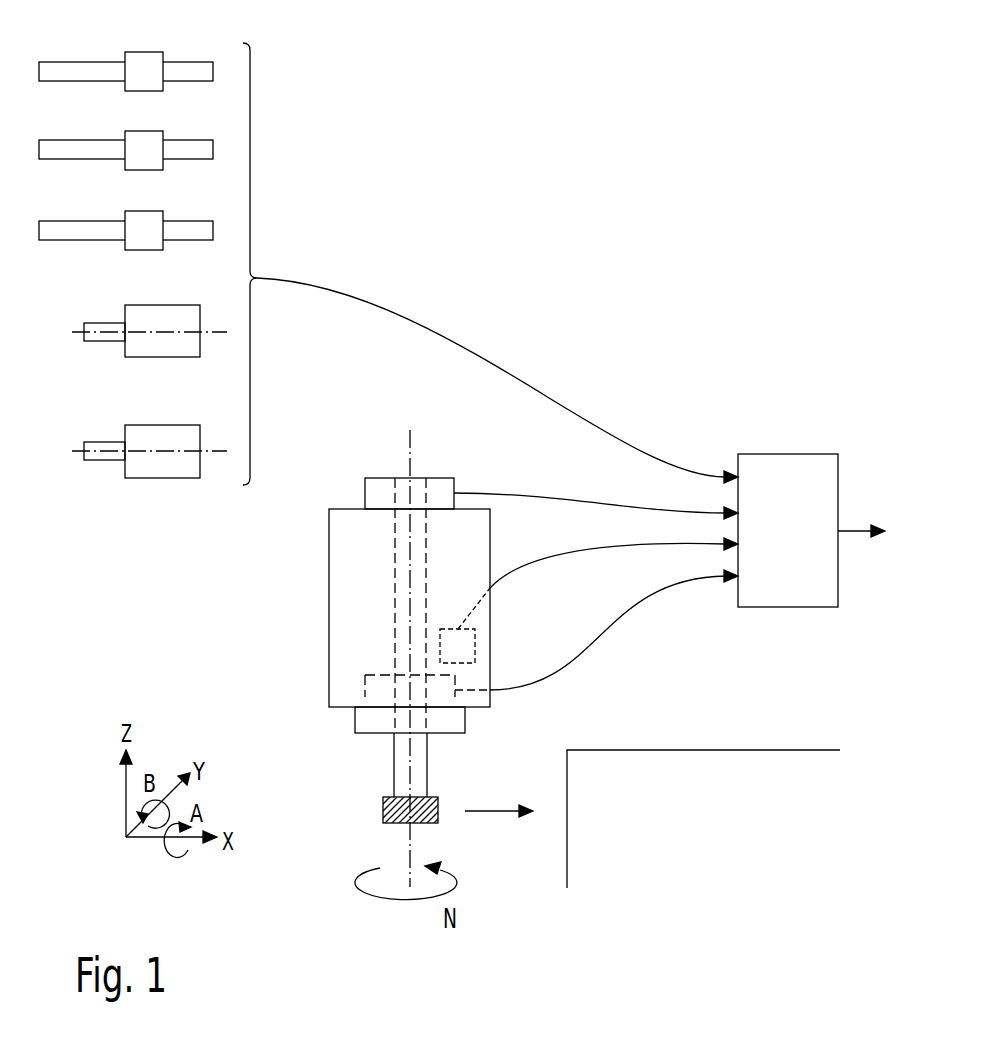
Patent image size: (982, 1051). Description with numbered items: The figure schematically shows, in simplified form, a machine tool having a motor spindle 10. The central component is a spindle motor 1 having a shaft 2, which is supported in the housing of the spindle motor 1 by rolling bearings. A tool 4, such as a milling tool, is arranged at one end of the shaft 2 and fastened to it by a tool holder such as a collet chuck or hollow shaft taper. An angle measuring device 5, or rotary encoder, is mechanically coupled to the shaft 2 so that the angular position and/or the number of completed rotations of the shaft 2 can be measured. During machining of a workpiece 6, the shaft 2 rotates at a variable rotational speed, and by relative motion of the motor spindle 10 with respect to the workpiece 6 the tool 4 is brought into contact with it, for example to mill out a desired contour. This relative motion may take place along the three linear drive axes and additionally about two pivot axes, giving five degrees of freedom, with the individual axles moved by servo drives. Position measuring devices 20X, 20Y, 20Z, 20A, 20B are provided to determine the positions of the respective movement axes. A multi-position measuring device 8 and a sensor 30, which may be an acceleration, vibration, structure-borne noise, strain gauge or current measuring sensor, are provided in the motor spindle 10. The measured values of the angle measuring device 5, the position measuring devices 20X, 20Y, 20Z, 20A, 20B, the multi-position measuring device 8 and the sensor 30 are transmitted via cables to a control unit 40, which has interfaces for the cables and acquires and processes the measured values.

The spindle motor 1 is at (329, 622).
The shaft 2 is at (395, 548).
The tool 4 is at (383, 812).
The angle measuring device 5 is at (380, 478).
The workpiece 6 is at (680, 750).
The multi-position measuring device 8 is at (374, 675).
The motor spindle 10 is at (236, 594).
The position measuring device 20X is at (68, 62).
The position measuring device 20Y is at (68, 140).
The position measuring device 20Z is at (68, 221).
The position measuring device 20A is at (181, 305).
The position measuring device 20B is at (181, 425).
The sensor 30 is at (475, 638).
The control unit 40 is at (786, 454).